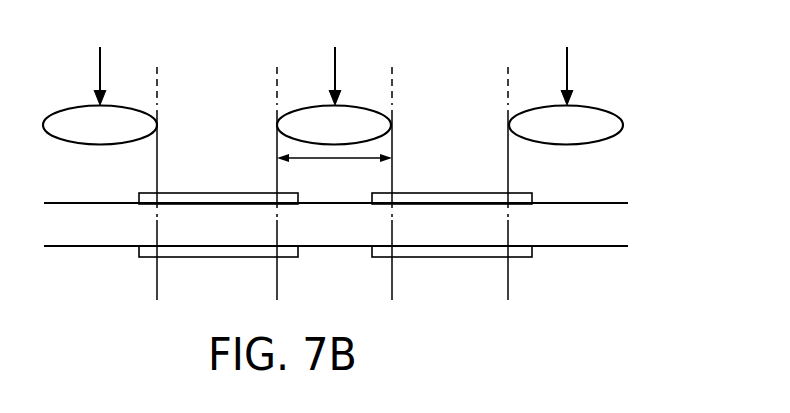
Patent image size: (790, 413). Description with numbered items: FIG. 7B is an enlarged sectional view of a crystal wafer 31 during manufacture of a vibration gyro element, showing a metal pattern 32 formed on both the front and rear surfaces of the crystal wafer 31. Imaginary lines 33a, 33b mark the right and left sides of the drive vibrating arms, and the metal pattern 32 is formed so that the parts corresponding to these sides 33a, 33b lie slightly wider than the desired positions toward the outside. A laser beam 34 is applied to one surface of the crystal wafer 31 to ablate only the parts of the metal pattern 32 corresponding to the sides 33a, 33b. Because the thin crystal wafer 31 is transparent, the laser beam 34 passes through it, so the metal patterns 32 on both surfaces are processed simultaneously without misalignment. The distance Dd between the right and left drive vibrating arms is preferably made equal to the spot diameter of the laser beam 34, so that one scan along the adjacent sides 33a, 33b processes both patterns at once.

The crystal wafer 31 is at (595, 203).
The metal pattern 32 is at (203, 193).
The right side of drive vibrating arm 33a is at (217, 171).
The left side of drive vibrating arm 33b is at (450, 171).
The laser beam 34 is at (77, 105).
The distance between the right and left drive vibrating arms Dd is at (334, 173).